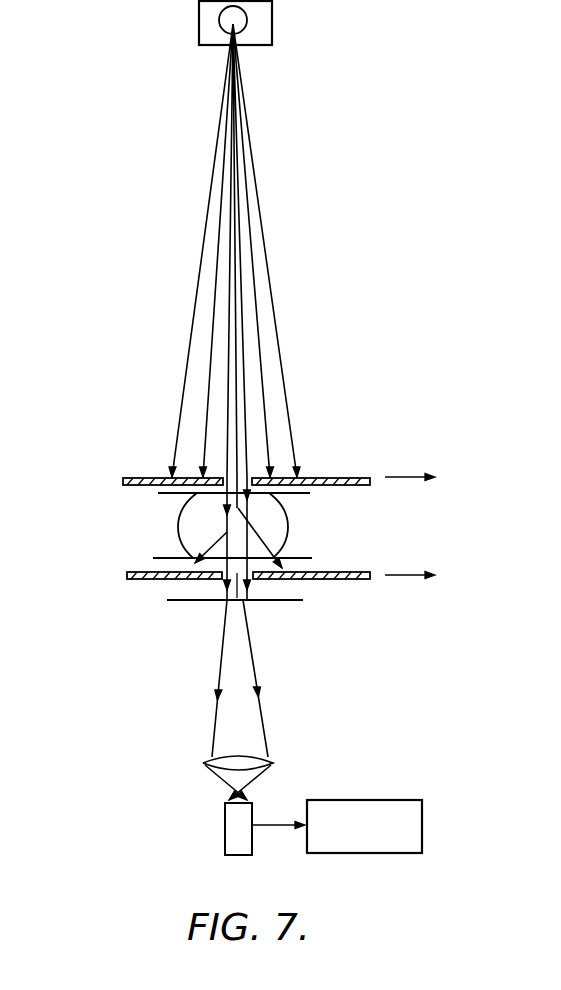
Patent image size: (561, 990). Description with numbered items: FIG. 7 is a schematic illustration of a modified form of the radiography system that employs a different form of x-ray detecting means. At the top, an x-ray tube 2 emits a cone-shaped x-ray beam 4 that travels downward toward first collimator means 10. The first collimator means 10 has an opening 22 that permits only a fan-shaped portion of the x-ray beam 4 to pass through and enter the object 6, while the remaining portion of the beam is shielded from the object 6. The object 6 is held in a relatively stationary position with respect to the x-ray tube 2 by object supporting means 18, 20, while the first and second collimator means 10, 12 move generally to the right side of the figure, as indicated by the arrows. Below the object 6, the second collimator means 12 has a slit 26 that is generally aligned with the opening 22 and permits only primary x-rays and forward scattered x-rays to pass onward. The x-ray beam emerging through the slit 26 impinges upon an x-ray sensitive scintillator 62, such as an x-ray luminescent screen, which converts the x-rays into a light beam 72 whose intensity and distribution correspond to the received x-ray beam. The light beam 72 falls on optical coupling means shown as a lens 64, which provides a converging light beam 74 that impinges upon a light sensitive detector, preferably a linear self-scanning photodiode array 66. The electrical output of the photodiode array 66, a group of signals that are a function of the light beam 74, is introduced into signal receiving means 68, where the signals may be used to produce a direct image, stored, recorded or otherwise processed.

The x-ray tube 2 is at (199, 20).
The x-ray beam 4 is at (268, 242).
The opening 22 is at (240, 480).
The first collimator means 10 is at (352, 477).
The object supporting means 18 is at (160, 494).
The object 6 is at (197, 525).
The object supporting means 20 is at (160, 558).
The second collimator means 12 is at (348, 580).
The x-ray sensitive scintillator 62 is at (190, 602).
The slit 26 is at (237, 598).
The light beam 72 is at (220, 679).
The lens 64 is at (248, 762).
The converging light beam 74 is at (227, 780).
The photodiode array 66 is at (230, 833).
The signal receiving means 68 is at (357, 800).